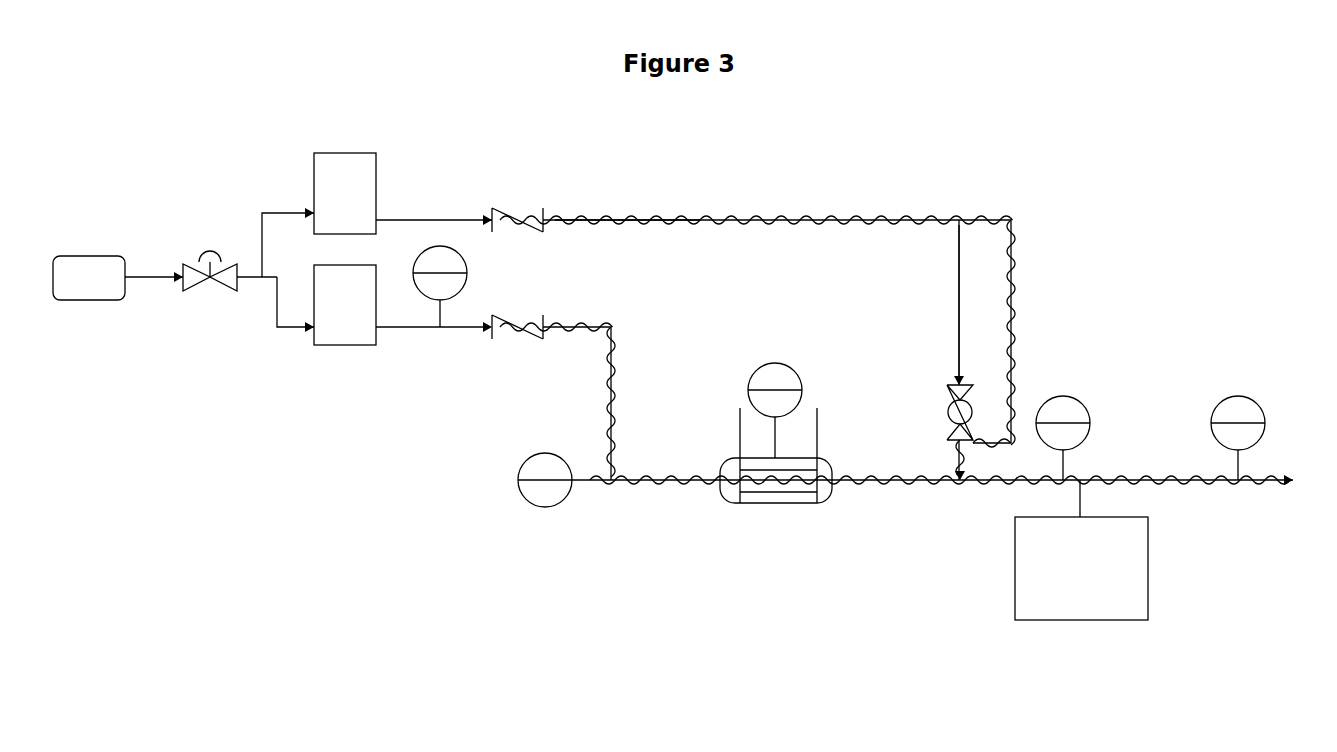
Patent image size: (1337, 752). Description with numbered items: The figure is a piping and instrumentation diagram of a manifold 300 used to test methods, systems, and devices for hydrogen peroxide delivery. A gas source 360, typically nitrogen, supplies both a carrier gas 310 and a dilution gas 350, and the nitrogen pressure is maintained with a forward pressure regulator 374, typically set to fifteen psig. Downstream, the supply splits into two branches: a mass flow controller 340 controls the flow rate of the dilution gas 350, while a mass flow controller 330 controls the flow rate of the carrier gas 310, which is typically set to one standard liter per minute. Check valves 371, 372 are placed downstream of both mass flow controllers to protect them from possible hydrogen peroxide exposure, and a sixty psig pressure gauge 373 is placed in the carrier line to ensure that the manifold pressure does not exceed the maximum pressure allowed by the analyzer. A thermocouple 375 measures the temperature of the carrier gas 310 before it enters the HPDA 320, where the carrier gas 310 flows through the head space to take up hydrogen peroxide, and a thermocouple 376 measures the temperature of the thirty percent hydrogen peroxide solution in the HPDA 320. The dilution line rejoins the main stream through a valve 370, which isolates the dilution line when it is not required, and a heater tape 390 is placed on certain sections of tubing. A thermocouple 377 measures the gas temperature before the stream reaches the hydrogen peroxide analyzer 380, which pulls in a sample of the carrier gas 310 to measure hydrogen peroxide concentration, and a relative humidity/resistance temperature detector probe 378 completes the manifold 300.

The manifold 300 is at (1200, 169).
The gas source 360 is at (77, 254).
The forward pressure regulator 374 is at (219, 297).
The mass flow controller 340 is at (335, 153).
The mass flow controller 330 is at (335, 346).
The dilution gas 350 is at (425, 220).
The carrier gas 310 is at (422, 328).
The pressure gauge 373 is at (447, 246).
The check valve 371 is at (530, 201).
The check valve 372 is at (525, 311).
The heater tape 390 is at (968, 218).
The valve 370 is at (947, 392).
The thermocouple 376 is at (755, 370).
The HPDA 320 is at (748, 506).
The thermocouple 375 is at (545, 507).
The thermocouple 377 is at (1065, 396).
The relative humidity/resistance temperature detector probe 378 is at (1250, 396).
The hydrogen peroxide analyzer 380 is at (1080, 621).